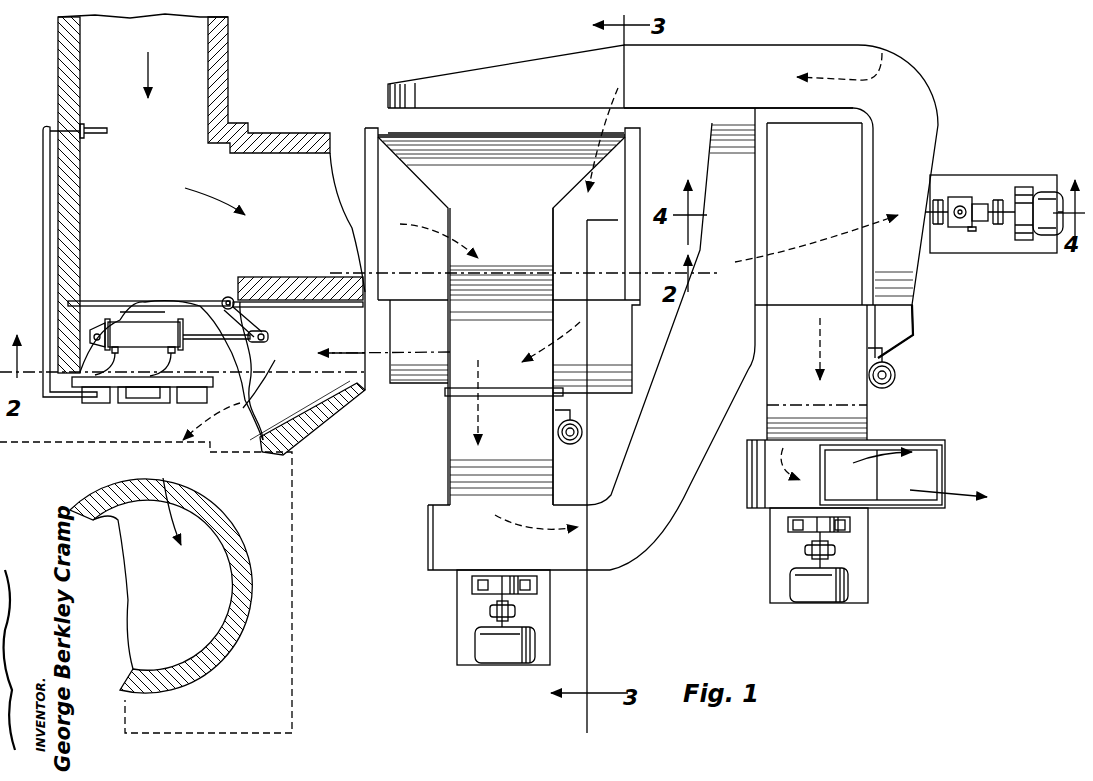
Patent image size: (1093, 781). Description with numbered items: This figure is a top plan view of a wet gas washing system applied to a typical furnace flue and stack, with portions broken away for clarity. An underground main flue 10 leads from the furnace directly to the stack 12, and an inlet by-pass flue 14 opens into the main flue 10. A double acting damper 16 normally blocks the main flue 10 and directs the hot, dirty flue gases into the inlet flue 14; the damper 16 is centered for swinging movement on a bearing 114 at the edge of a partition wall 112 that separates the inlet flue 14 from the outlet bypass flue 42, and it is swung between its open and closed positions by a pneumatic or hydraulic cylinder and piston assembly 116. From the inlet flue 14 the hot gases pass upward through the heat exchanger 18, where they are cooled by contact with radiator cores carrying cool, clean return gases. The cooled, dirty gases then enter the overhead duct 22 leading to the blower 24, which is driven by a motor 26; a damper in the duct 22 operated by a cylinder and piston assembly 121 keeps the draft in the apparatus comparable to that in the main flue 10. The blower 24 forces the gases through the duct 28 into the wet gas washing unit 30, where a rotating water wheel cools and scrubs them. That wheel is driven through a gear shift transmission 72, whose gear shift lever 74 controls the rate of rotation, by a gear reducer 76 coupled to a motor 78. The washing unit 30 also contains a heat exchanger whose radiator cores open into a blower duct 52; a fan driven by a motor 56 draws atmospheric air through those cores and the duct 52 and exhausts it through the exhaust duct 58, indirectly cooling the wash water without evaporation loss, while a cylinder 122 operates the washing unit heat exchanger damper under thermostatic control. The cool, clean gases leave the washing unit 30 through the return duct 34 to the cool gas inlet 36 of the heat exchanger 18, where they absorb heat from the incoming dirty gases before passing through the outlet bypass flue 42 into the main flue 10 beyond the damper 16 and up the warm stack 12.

The underground flue 10 is at (66, 119).
The stack 12 is at (232, 657).
The inlet by-pass flue 14 is at (285, 133).
The double acting damper 16 is at (166, 300).
The heat exchanger 18 is at (374, 219).
The inlet or overhead duct 22 is at (457, 421).
The fan or blower 24 is at (446, 556).
The motor 26 is at (515, 650).
The duct 28 is at (675, 490).
The wet gas washing unit 30 is at (915, 328).
The return duct 34 is at (825, 45).
The cool gas inlet 36 is at (386, 120).
The outlet bypass flue 42 is at (329, 406).
The blower duct 52 is at (870, 417).
The motor 56 is at (838, 590).
The exhaust duct 58 is at (947, 467).
The gear shift transmission 72 is at (973, 229).
The gear shift lever 74 is at (961, 200).
The gear reducer 76 is at (1025, 188).
The motor 78 is at (1048, 232).
The partition wall 112 is at (282, 280).
The bearing 114 is at (227, 297).
The pneumatic or hydraulic cylinder and piston assembly 116 is at (128, 332).
The cylinder and piston assembly 121 is at (583, 432).
The cylinder 122 is at (896, 379).